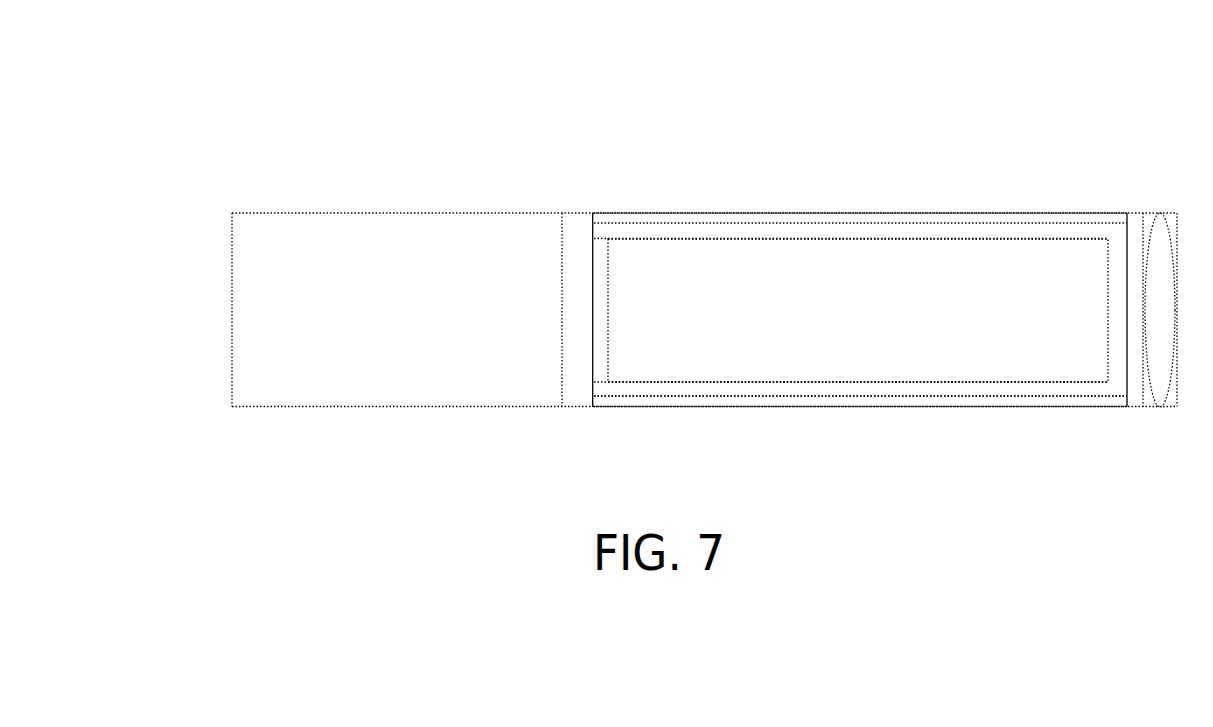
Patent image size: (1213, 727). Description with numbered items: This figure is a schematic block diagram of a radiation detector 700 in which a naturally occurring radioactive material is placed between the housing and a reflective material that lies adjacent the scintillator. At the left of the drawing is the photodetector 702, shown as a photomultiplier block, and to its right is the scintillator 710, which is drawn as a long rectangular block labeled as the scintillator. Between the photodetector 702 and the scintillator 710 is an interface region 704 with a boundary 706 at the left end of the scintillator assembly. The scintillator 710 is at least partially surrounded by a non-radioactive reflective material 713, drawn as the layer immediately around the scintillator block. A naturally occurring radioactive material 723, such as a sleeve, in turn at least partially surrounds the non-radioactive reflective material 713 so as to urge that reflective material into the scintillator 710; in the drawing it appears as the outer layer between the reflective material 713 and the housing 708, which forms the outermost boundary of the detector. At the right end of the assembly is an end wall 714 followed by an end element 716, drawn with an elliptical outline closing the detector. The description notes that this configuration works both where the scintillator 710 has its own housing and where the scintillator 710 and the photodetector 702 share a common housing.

The radiation detector assembly 700 is at (704, 219).
The photodetector 702 is at (365, 288).
The optical coupling window 704 is at (550, 325).
The inner housing liner 706 is at (817, 283).
The housing 708 is at (860, 287).
The scintillator 710 is at (858, 275).
The non-radioactive reflective material 713 is at (851, 275).
The end plate 714 is at (1096, 287).
The end cap window 716 is at (1130, 329).
The naturally occurring radioactive material 723 is at (860, 418).